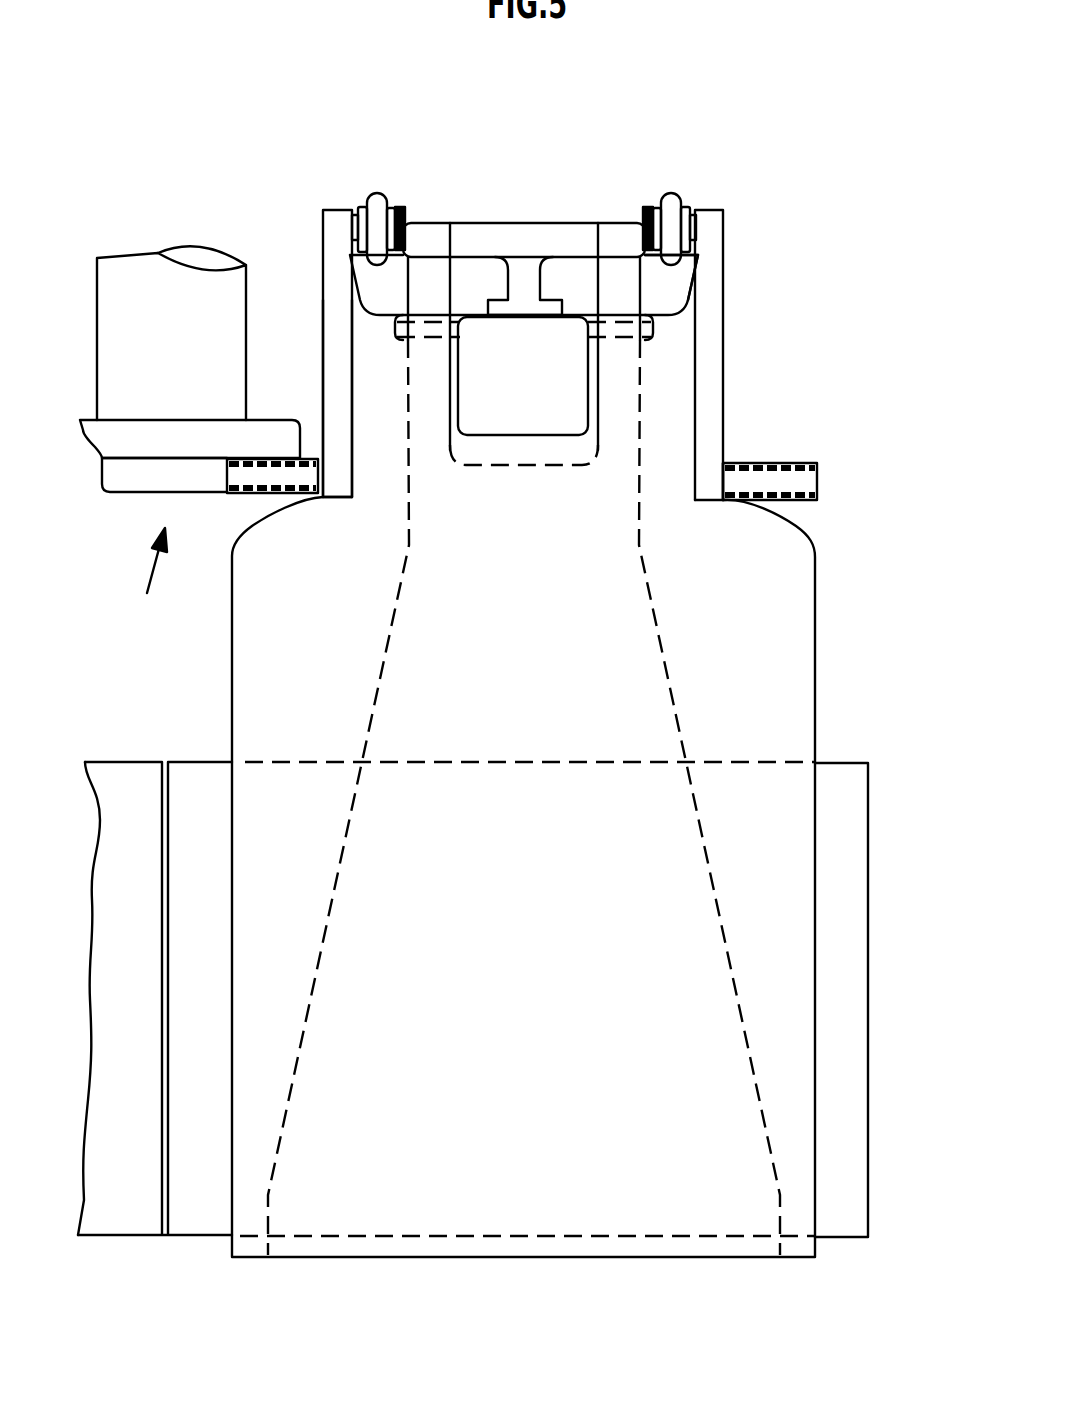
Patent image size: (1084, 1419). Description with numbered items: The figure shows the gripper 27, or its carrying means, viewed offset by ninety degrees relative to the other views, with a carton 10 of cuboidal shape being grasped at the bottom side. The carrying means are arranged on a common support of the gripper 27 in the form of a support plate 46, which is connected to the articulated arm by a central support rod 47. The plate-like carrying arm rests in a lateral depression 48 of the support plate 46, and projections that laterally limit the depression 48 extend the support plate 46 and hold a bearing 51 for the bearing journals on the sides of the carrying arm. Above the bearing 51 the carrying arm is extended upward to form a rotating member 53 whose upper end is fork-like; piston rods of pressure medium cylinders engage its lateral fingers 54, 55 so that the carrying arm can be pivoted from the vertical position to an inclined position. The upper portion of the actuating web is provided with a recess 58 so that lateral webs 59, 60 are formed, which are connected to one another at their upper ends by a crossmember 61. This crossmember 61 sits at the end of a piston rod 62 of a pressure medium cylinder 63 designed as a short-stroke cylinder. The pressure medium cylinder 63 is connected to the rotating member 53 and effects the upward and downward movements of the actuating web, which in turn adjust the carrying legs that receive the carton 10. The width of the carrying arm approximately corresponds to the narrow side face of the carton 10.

The carton 10 is at (198, 1218).
The gripper 27 is at (148, 579).
The support plate 46 is at (118, 477).
The central support rod 47 is at (117, 278).
The lateral depression 48 is at (727, 460).
The bearing 51 is at (248, 477).
The rotating member 53 is at (353, 363).
The lateral finger 54 is at (338, 210).
The lateral finger 55 is at (710, 225).
The recess 58 is at (593, 457).
The lateral web 59 is at (428, 282).
The lateral web 60 is at (612, 270).
The crossmember 61 is at (557, 242).
The piston rod 62 is at (527, 287).
The pressure medium cylinder 63 is at (557, 378).